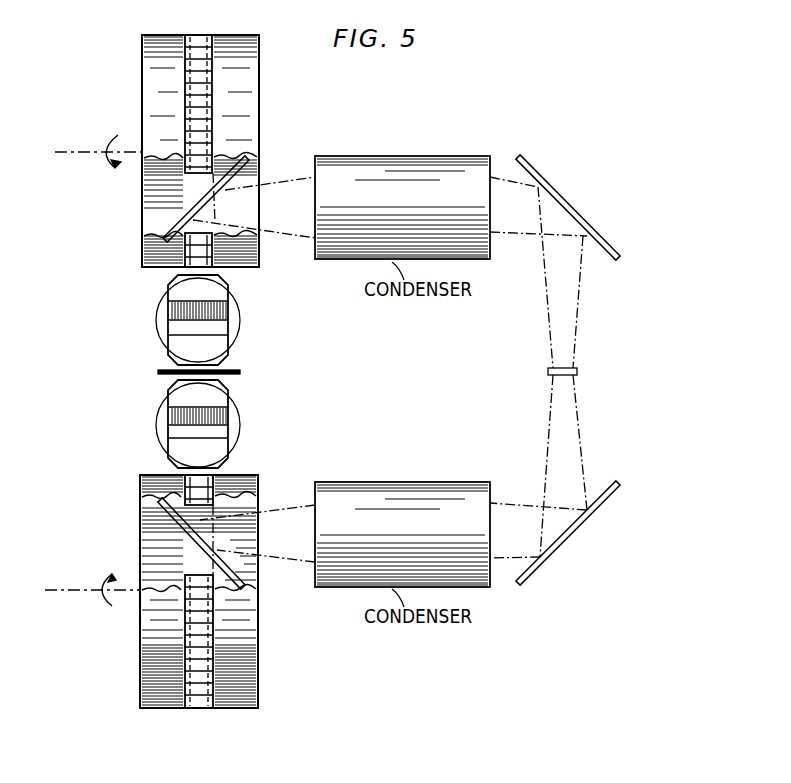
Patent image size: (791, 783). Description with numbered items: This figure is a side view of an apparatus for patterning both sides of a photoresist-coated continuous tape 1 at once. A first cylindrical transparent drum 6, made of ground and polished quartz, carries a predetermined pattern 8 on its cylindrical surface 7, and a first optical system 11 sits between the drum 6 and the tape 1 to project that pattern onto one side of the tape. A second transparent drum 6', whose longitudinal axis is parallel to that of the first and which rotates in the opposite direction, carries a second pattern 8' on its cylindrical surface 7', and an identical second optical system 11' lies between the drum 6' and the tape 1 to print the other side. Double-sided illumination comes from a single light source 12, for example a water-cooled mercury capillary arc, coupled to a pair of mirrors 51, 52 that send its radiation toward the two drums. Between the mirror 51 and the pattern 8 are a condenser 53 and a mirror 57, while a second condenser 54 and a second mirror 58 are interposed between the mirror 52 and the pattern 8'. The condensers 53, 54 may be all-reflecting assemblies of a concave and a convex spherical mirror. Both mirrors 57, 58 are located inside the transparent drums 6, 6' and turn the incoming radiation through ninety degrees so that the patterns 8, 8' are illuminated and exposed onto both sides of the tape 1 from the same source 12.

The continuous tape 1 is at (240, 372).
The first cylindrical transparent drum 6 is at (179, 151).
The second cylindrical transparent drum 6' is at (178, 591).
The cylindrical surface 7 is at (178, 35).
The cylindrical surface 7' is at (204, 726).
The predetermined pattern 8 is at (236, 151).
The second predetermined pattern 8' is at (201, 611).
The first optical system 11 is at (221, 320).
The second optical system 11' is at (224, 424).
The light source 12 is at (577, 372).
The mirror 51 is at (602, 243).
The mirror 52 is at (606, 498).
The condenser 53 is at (397, 156).
The condenser 54 is at (398, 482).
The mirror 57 is at (186, 211).
The second mirror 58 is at (240, 572).